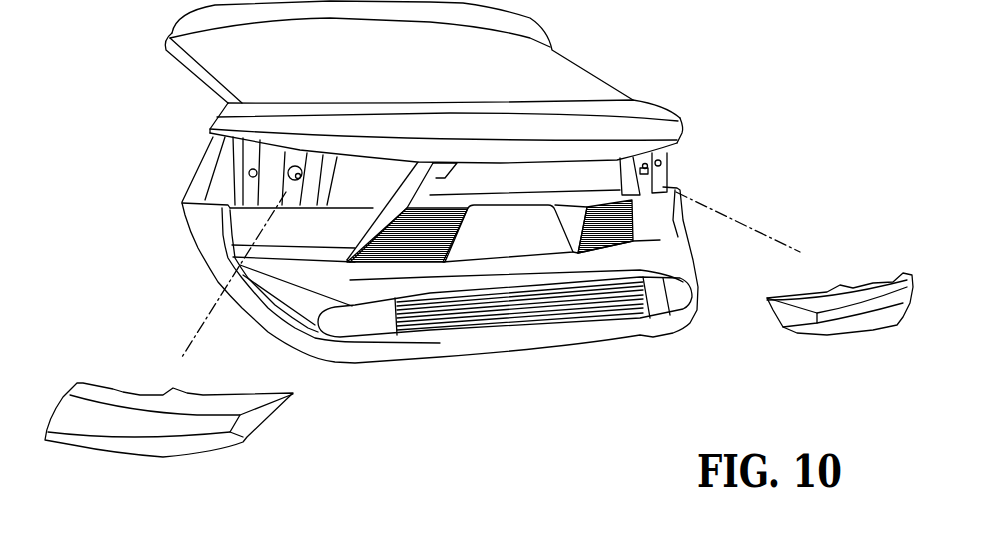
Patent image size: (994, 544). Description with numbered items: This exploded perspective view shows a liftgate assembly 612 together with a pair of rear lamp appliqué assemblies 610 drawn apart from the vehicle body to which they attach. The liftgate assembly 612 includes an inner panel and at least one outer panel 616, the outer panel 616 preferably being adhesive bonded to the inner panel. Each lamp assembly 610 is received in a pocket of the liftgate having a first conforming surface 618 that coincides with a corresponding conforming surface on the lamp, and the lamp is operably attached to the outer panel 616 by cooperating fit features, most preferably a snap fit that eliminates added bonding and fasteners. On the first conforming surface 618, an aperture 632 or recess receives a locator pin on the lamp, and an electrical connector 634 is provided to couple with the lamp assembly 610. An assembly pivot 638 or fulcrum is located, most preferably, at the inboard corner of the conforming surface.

The rear lamp appliqué assembly 610 is at (100, 368).
The liftgate assembly 612 is at (665, 72).
The outer panel 616 is at (673, 248).
The first conforming surface 618 is at (329, 207).
The aperture 632 is at (249, 171).
The electrical connector 634 is at (299, 168).
The assembly pivot 638 is at (423, 165).